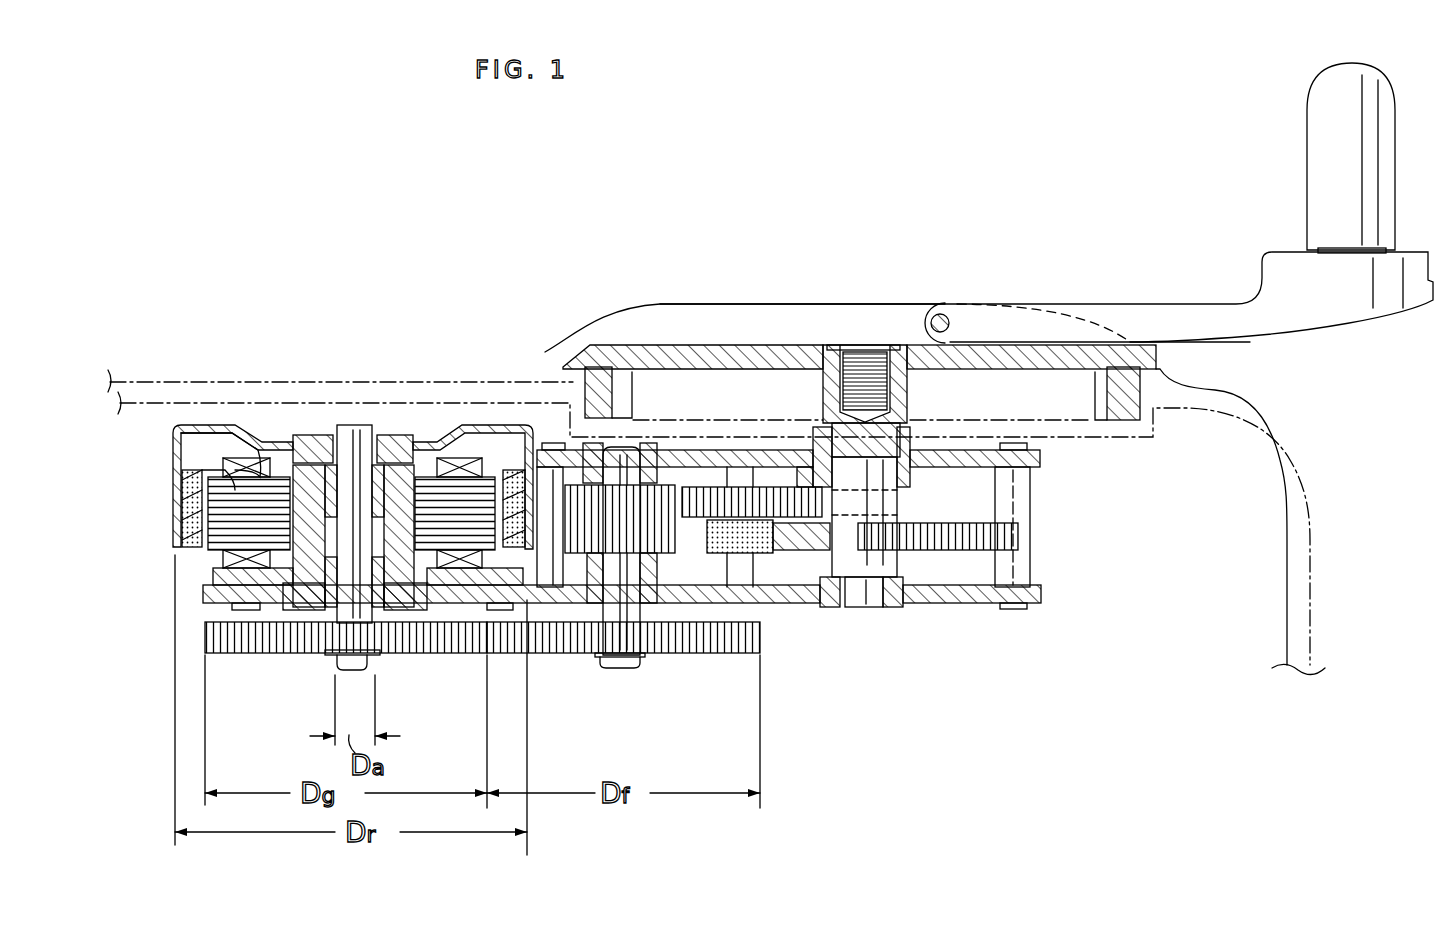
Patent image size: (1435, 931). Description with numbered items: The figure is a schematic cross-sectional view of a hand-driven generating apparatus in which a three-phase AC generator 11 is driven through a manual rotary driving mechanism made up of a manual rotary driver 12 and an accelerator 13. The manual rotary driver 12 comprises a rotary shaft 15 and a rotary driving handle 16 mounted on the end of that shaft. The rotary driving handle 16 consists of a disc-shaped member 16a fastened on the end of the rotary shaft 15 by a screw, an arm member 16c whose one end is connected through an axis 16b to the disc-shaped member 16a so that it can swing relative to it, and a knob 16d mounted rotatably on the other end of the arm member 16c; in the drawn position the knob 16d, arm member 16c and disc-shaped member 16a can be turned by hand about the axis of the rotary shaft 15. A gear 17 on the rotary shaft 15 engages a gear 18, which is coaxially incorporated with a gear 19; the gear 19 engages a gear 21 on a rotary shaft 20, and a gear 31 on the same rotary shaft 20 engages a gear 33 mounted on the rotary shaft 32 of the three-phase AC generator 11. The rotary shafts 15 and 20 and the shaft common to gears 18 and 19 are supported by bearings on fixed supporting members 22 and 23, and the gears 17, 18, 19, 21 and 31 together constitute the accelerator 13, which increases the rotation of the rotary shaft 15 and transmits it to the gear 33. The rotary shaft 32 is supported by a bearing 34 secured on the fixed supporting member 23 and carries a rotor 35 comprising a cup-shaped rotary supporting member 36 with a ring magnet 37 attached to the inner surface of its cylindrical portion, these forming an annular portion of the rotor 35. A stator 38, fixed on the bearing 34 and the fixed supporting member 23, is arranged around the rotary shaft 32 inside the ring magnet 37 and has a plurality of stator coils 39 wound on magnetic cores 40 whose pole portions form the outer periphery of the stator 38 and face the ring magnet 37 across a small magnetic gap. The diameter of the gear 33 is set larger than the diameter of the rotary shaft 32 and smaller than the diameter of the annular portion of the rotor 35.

The three-phase AC generator 11 is at (395, 407).
The manual rotary driver 12 is at (995, 293).
The accelerator 13 is at (779, 483).
The rotary shaft 15 is at (823, 432).
The rotary driving handle 16 is at (1092, 292).
The disc-shaped member 16a is at (862, 305).
The axis 16b is at (941, 313).
The arm member 16c is at (1155, 308).
The knob 16d is at (1320, 115).
The gear 17 is at (1020, 538).
The gear 18 is at (768, 545).
The gear 19 is at (712, 497).
The rotary shaft 20 is at (627, 490).
The gear 21 is at (672, 540).
The fixed supporting member 22 is at (1040, 455).
The fixed supporting member 23 is at (960, 603).
The gear 31 is at (690, 655).
The rotary shaft 32 is at (357, 440).
The gear 33 is at (445, 655).
The bearing 34 is at (303, 605).
The rotor 35 is at (186, 420).
The cup-shaped rotary supporting member 36 is at (497, 438).
The ring magnet 37 is at (185, 506).
The stator 38 is at (212, 453).
The stator coils 39 is at (247, 463).
The magnetic cores 40 is at (218, 480).